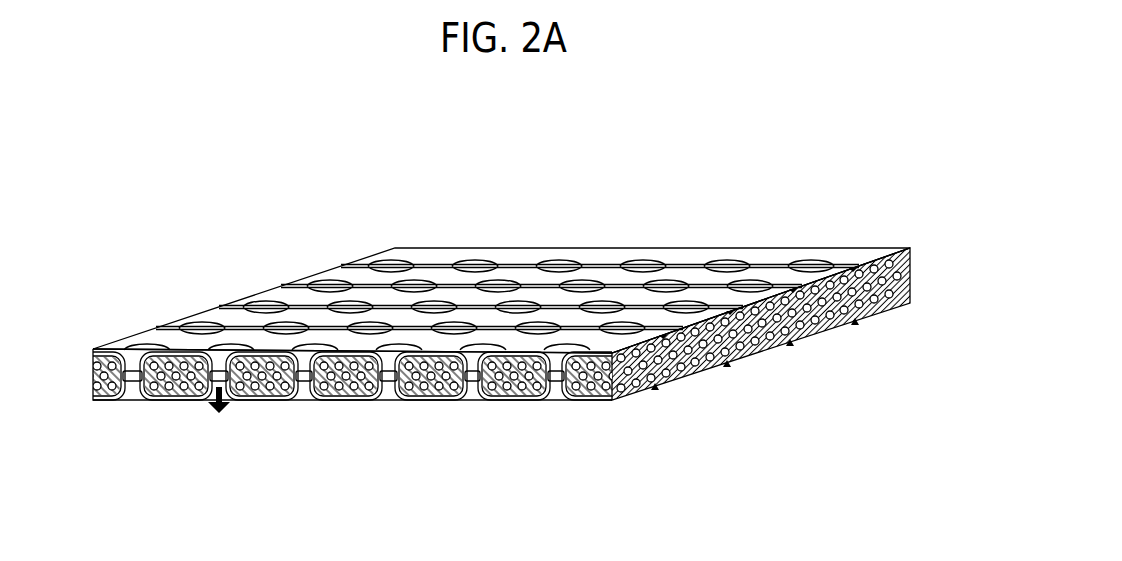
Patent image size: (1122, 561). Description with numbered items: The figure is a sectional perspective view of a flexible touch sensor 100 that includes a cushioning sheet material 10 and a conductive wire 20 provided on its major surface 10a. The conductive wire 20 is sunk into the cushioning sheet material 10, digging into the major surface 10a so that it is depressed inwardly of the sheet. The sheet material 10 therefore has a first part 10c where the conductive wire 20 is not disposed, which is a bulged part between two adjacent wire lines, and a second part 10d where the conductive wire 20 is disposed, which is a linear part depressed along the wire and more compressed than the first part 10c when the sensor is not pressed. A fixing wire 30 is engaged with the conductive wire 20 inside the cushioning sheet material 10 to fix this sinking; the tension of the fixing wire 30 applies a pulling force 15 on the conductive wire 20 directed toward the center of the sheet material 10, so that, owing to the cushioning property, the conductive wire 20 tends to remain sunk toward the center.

The flexible touch sensor 100 is at (707, 159).
The cushioning sheet material 10 is at (727, 358).
The major surface 10a is at (525, 258).
The first part 10c is at (827, 277).
The second part 10d is at (793, 289).
The conductive wire 20 is at (387, 357).
The fixing wire 30 is at (384, 401).
The force 15 is at (213, 405).